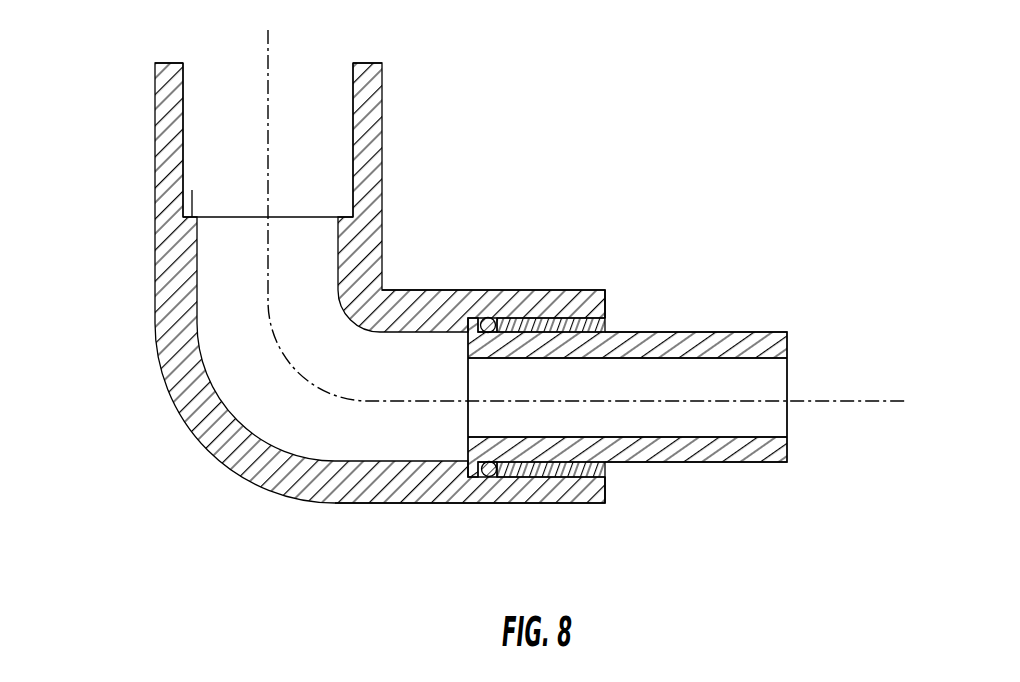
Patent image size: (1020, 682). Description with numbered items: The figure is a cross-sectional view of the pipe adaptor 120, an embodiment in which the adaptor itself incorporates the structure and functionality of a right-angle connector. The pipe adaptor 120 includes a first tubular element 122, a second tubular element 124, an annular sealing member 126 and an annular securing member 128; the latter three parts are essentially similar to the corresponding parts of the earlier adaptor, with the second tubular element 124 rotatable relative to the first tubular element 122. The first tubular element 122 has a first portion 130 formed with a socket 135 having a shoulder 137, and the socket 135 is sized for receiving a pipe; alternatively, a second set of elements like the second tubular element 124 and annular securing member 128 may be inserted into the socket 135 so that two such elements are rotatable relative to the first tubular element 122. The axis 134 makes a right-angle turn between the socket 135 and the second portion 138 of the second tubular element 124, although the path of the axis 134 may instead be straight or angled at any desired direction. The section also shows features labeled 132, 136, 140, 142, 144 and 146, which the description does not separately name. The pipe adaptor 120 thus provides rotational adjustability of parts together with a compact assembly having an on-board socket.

The pipe adaptor 120 is at (611, 244).
The first tubular element 122 is at (160, 358).
The second tubular element 124 is at (642, 343).
The annular sealing member 126 is at (488, 317).
The annular securing member 128 is at (607, 318).
The first portion 130 is at (382, 100).
The lower wall of fitting arm 132 is at (522, 493).
The axis 134 is at (842, 402).
The socket 135 is at (183, 95).
The inner bore of pipe 136 is at (510, 437).
The shoulder 137 is at (192, 216).
The second portion 138 is at (698, 462).
The pipe end 140 is at (468, 373).
The second arm of fitting 142 is at (422, 308).
The seal groove 144 is at (485, 345).
The threads 146 is at (509, 318).